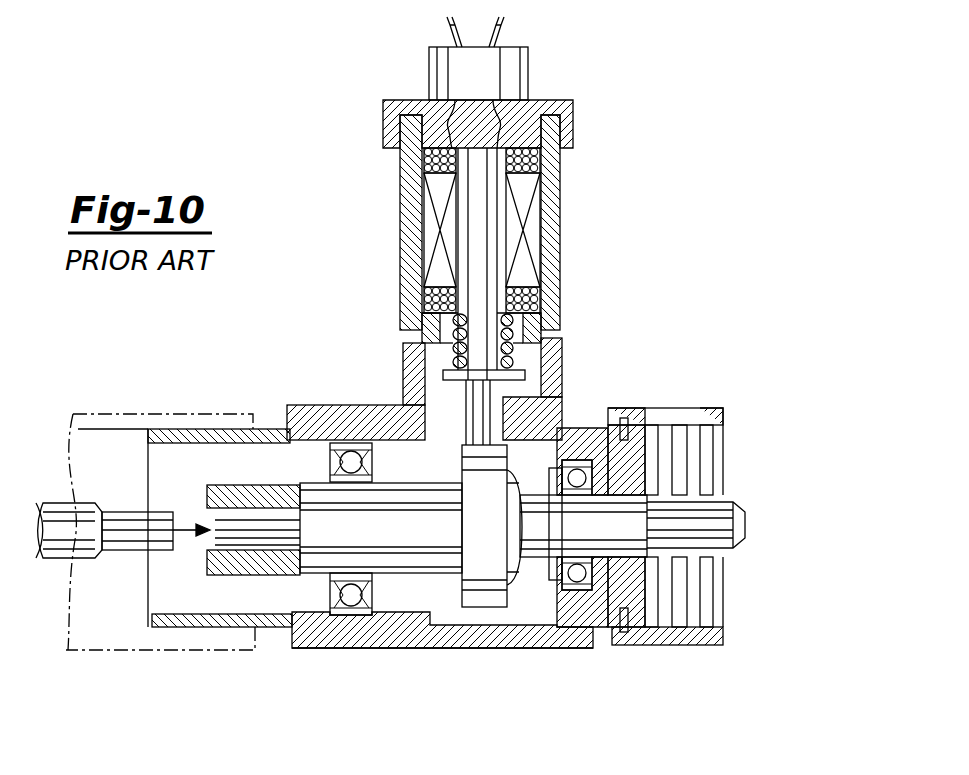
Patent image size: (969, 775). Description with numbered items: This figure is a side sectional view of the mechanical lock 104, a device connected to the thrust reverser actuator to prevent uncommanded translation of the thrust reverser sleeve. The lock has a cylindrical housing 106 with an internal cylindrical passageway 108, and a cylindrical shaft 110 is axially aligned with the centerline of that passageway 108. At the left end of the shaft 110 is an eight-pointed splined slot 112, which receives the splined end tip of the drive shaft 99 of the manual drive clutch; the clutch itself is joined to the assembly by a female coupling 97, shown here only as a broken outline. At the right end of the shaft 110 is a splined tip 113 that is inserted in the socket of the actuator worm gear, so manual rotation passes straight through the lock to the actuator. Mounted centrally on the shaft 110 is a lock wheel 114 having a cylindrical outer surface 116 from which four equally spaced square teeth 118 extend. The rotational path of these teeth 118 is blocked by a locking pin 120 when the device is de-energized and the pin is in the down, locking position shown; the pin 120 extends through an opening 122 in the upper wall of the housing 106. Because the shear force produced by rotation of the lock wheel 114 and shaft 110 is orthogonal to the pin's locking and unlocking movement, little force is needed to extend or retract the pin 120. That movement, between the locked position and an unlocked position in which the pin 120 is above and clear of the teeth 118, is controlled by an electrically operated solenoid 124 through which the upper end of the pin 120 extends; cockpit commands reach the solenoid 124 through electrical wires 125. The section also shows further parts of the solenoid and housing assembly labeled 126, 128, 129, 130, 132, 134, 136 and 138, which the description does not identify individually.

The female coupling 97 is at (184, 414).
The drive shaft 99 is at (118, 505).
The mechanical lock 104 is at (570, 218).
The cylindrical housing 106 is at (440, 640).
The internal cylindrical passageway 108 is at (397, 612).
The cylindrical shaft 110 is at (322, 553).
The eight-pointed splined slot 112 is at (207, 546).
The splined tip 113 is at (700, 488).
The lock wheel 114 is at (487, 606).
The cylindrical outer surface 116 is at (490, 530).
The square teeth 118 is at (507, 617).
The locking pin 120 is at (562, 395).
The opening 122 is at (447, 416).
The solenoid 124 is at (541, 182).
The electrical wires 125 is at (452, 28).
The coil bobbin 126 is at (541, 318).
The return spring 128 is at (455, 348).
The solenoid housing 129 is at (402, 200).
The mounting flange 130 is at (562, 372).
The input bearing 132 is at (352, 625).
The output bearing 134 is at (578, 583).
The gear housing 136 is at (695, 640).
The input housing cup 138 is at (232, 429).